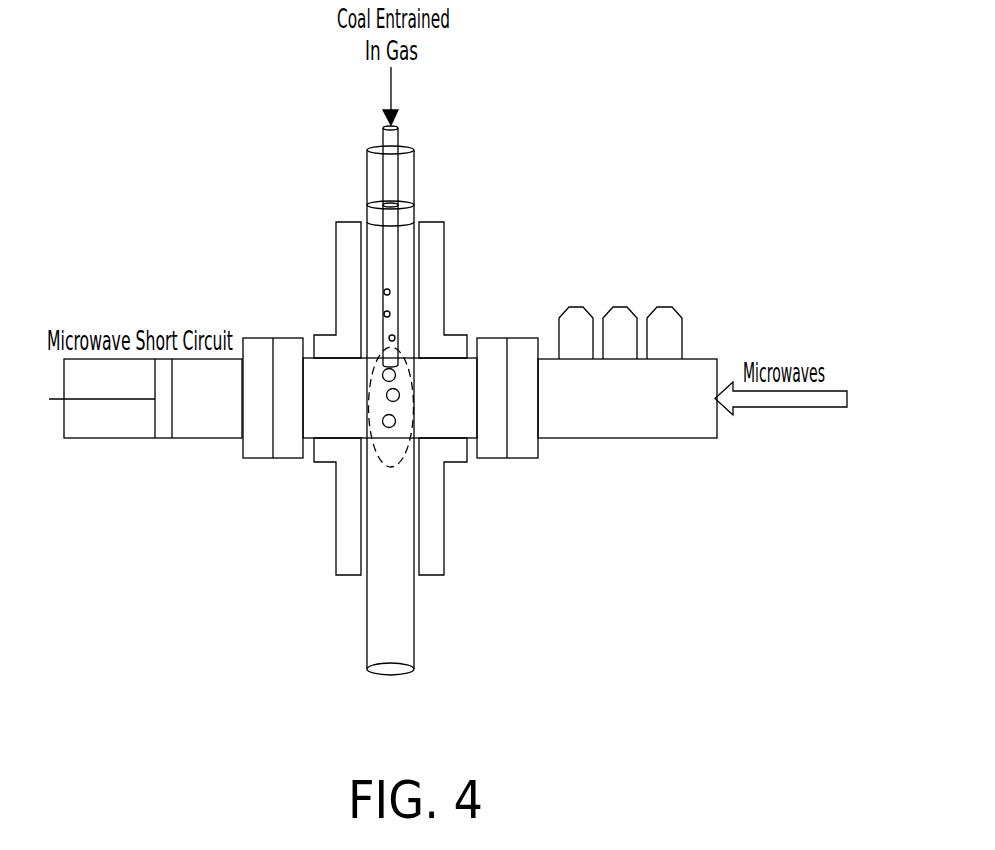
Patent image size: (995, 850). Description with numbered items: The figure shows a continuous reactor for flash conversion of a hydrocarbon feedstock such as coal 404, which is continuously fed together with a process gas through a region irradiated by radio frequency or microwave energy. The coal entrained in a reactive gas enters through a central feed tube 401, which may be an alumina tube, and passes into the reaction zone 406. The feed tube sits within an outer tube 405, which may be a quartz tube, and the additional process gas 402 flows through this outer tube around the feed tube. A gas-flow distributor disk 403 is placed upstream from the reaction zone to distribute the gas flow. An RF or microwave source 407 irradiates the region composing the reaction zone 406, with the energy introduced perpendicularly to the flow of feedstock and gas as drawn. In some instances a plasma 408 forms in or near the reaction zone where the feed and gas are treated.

The feed tube 401 is at (398, 131).
The additional process gas 402 is at (414, 185).
The gas-flow distributor disk 403 is at (370, 220).
The HFH feed (coal) 404 is at (384, 291).
The outer tube 405 is at (440, 253).
The reaction zone 406 is at (365, 413).
The RF or microwave source 407 is at (795, 467).
The plasma 408 is at (403, 458).